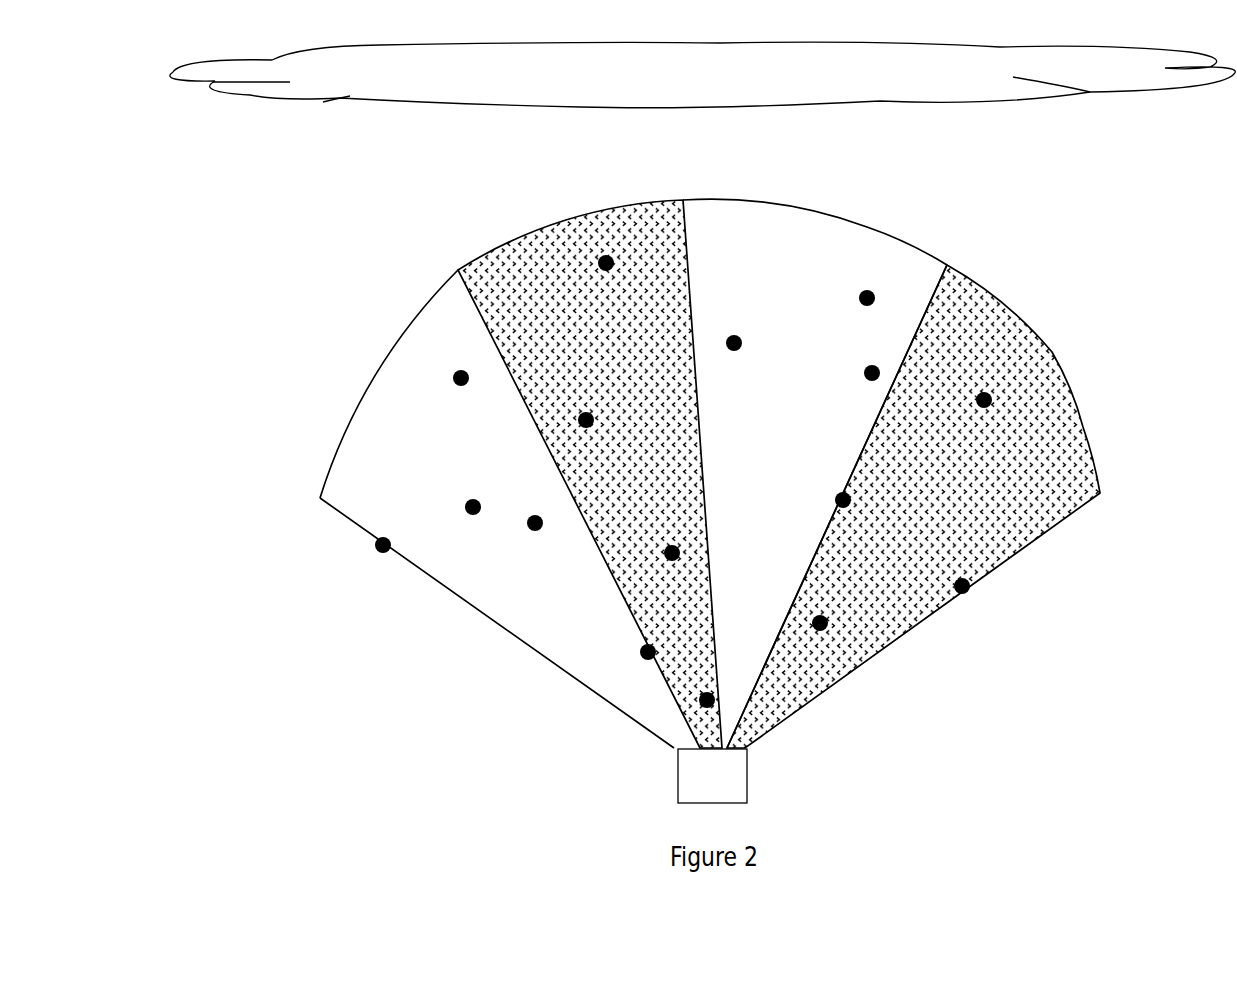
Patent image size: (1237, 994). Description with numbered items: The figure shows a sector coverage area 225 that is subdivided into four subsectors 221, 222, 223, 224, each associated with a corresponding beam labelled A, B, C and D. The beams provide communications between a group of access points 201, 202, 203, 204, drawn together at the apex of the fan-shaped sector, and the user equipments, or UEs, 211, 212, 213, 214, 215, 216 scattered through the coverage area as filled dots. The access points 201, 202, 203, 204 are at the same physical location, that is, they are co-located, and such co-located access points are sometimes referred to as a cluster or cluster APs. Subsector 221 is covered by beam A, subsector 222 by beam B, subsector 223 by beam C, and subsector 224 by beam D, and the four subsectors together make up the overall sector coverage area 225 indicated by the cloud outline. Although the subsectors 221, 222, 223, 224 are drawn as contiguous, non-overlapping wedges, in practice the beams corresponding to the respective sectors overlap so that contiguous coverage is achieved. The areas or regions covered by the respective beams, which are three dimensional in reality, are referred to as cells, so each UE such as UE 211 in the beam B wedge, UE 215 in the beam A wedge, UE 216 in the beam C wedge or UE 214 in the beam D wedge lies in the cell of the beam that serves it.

The access point 201 is at (811, 776).
The access point 202 is at (712, 776).
The access point 203 is at (712, 776).
The access point 204 is at (752, 786).
The UE 211 is at (620, 253).
The UE 212 is at (700, 707).
The UE 213 is at (640, 662).
The UE 214 is at (995, 418).
The UE 215 is at (476, 524).
The UE 216 is at (750, 346).
The subsector 221 is at (407, 410).
The subsector 222 is at (568, 320).
The subsector 223 is at (817, 290).
The subsector 224 is at (968, 327).
The sector coverage area 225 is at (702, 76).